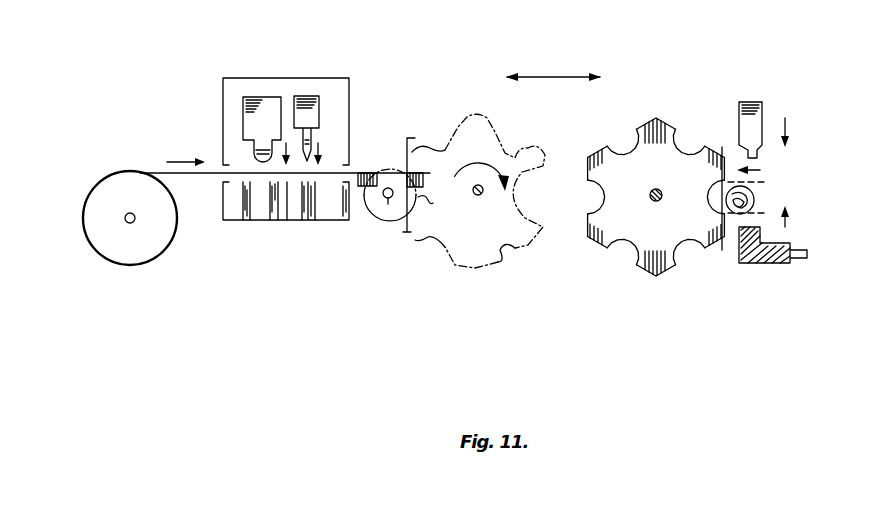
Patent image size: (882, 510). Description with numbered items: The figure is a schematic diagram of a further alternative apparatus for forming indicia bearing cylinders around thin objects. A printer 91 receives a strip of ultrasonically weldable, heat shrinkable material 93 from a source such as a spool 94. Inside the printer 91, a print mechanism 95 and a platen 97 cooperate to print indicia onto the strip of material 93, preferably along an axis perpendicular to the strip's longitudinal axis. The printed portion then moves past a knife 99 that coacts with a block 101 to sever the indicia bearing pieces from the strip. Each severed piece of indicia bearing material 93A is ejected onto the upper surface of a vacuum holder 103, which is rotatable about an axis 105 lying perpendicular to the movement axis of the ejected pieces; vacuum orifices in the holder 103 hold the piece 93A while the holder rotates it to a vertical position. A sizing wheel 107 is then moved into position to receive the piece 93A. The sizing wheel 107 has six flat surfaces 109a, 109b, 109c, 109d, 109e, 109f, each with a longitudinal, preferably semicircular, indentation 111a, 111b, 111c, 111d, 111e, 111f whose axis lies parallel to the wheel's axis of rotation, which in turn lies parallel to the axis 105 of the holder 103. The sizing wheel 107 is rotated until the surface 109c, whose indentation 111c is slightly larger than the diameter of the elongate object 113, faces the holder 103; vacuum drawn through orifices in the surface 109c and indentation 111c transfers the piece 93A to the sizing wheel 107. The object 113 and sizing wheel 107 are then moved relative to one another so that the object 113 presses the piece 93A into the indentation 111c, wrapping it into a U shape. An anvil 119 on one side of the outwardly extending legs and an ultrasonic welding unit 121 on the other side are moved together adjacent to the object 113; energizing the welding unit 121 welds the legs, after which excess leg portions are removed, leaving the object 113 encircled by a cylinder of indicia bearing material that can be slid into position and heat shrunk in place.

The printer 91 is at (286, 77).
The strip of ultrasonically weldable, heat shrinkable material 93 is at (193, 178).
The piece of indicia bearing material 93A is at (365, 168).
The spool 94 is at (130, 263).
The print mechanism 95 is at (252, 98).
The platen 97 is at (262, 218).
The knife 99 is at (311, 97).
The block 101 is at (310, 220).
The vacuum holder 103 is at (362, 220).
The axis 105 is at (378, 220).
The sizing wheel 107 is at (483, 257).
The surface 109a is at (527, 247).
The surface 109b is at (460, 273).
The surface 109c is at (417, 217).
The surface 109d is at (468, 114).
The surface 109e is at (550, 137).
The surface 109f is at (547, 207).
The longitudinal indentation 111a is at (497, 260).
The longitudinal indentation 111b is at (440, 253).
The longitudinal indentation 111c is at (707, 197).
The longitudinal indentation 111d is at (452, 146).
The longitudinal indentation 111e is at (617, 243).
The longitudinal indentation 111f is at (527, 176).
The elongate object 113 is at (478, 200).
The anvil 119 is at (762, 108).
The ultrasonic welding unit 121 is at (767, 263).